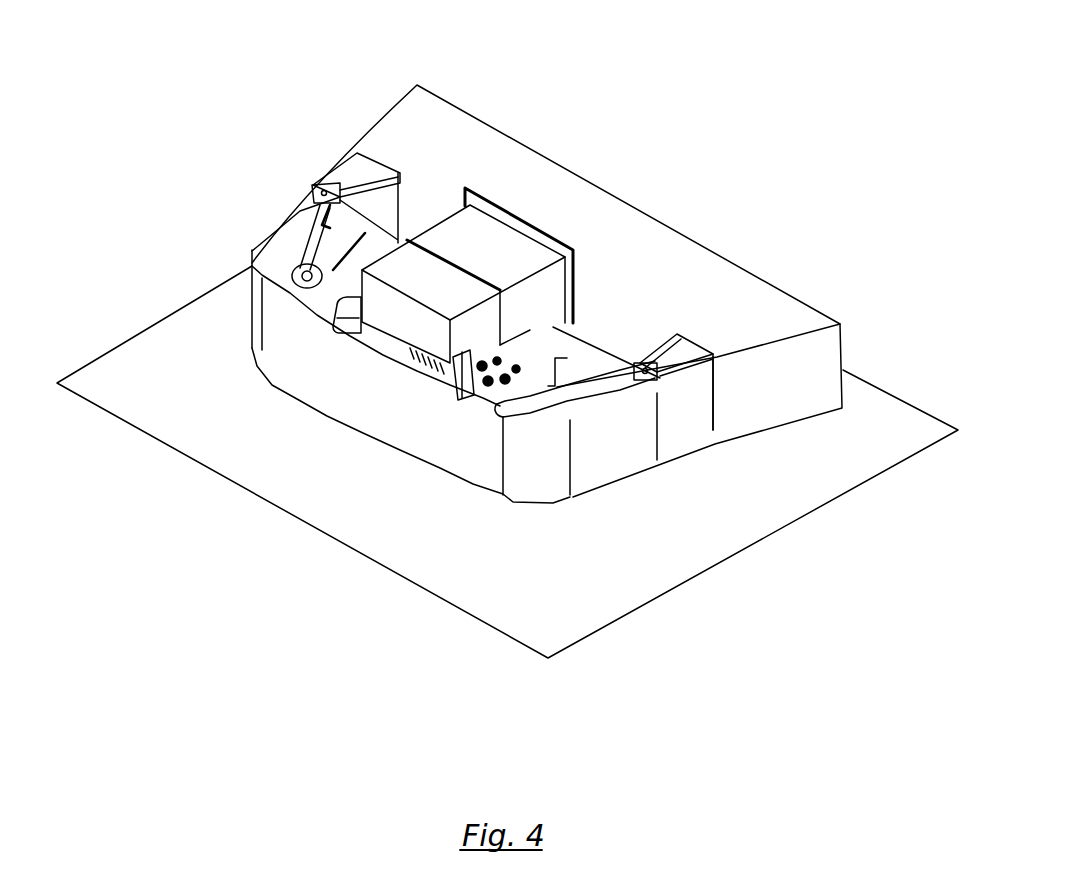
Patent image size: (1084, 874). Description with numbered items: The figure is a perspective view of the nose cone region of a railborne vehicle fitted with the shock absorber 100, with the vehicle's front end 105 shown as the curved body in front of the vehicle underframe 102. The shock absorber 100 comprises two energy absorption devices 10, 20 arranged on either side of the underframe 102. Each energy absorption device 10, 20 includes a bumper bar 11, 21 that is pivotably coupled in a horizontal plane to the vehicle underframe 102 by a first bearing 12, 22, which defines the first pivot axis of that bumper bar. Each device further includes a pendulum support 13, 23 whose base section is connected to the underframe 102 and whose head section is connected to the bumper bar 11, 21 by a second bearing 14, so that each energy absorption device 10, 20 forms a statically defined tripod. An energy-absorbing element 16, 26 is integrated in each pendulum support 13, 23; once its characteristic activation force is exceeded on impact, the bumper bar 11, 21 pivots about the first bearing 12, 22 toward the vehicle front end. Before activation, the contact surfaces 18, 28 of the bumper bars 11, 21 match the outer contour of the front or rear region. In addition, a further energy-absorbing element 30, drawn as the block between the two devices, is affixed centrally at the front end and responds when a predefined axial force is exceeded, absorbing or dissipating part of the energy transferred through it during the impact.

The shock absorber 100 is at (492, 49).
The vehicle underframe 102 is at (683, 157).
The front end 105 is at (296, 435).
The energy absorption device 10 is at (301, 266).
The bumper bar 11 is at (215, 265).
The first bearing 12 is at (258, 178).
The pendulum support 13 is at (229, 206).
The energy-absorbing element 16 is at (340, 240).
The second bearing 14 is at (205, 348).
The contact surface 18 is at (198, 230).
The energy absorption device 20 is at (575, 447).
The bumper bar 21 is at (573, 393).
The first bearing 22 is at (655, 380).
The pendulum support 23 is at (678, 302).
The energy-absorbing element 26 is at (628, 368).
The contact surface 28 is at (545, 417).
The further energy-absorbing element 30 is at (453, 302).